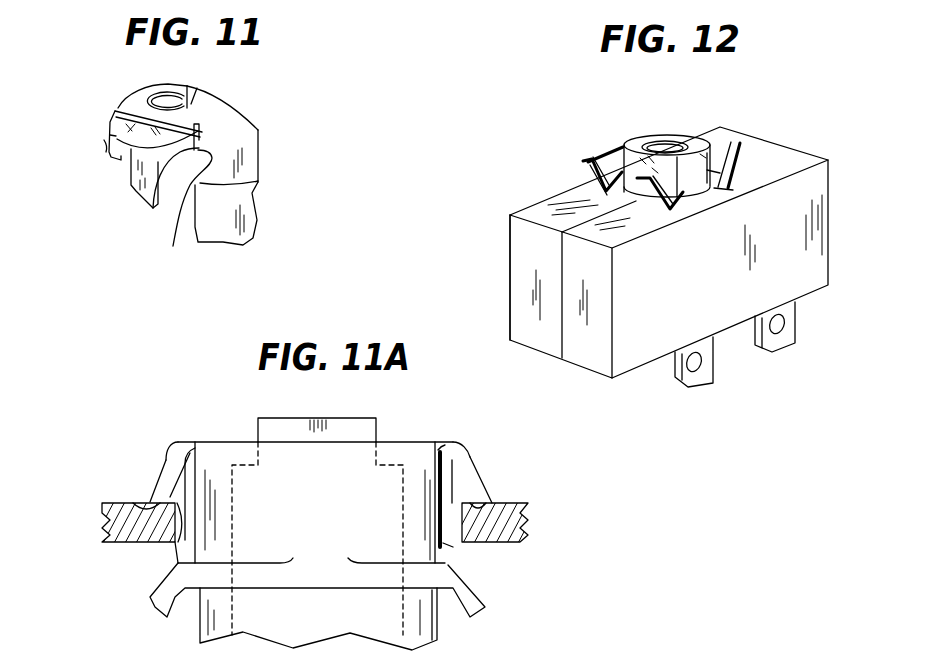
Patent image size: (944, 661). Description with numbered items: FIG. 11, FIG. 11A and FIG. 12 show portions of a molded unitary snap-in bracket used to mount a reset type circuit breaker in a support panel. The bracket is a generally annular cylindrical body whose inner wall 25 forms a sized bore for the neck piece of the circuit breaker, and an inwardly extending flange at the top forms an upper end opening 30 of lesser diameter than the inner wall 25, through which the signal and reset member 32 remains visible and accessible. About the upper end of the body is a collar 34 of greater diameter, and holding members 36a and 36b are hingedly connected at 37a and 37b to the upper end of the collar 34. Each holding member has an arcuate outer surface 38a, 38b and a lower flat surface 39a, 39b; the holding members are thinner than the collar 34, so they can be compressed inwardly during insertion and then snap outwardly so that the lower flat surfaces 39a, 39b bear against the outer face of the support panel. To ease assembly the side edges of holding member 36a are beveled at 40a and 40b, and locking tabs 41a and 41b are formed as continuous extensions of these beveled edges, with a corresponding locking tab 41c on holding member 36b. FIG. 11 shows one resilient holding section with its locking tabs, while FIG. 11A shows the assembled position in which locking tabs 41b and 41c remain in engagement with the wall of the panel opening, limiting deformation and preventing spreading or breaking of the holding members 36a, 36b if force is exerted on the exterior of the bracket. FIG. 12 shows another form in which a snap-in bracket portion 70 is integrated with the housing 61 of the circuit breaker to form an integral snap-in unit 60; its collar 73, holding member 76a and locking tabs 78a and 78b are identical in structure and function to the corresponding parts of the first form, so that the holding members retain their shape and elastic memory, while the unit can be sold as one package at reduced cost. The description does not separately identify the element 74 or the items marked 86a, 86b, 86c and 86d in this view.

In FIG. 11, the inner wall 25 is at (190, 105).
In FIG. 11, the upper end opening 30 is at (191, 90).
In FIG. 11A, the signal and reset member 32 is at (345, 420).
In FIG. 11, the collar 34 is at (252, 149).
In FIG. 11A, the collar 34 is at (411, 442).
In FIG. 11, the holding member 36a is at (118, 106).
In FIG. 11A, the holding member 36a is at (170, 467).
In FIG. 11A, the holding member 36b is at (481, 470).
In FIG. 11A, the hinged connection 37a is at (194, 444).
In FIG. 11A, the hinged connection 37b is at (443, 450).
In FIG. 11A, the arcuate outer surface 38a is at (175, 443).
In FIG. 11A, the arcuate outer surface 38b is at (463, 446).
In FIG. 11A, the lower flat surface 39a is at (128, 503).
In FIG. 11A, the lower flat surface 39b is at (496, 503).
In FIG. 11, the beveled side edge 40a is at (116, 112).
In FIG. 11, the beveled side edge 40b is at (182, 200).
In FIG. 11, the locking tab 41a is at (111, 154).
In FIG. 11, the locking tab 41b is at (153, 201).
In FIG. 11A, the locking tab 41b is at (185, 547).
In FIG. 11A, the locking tab 41c is at (447, 545).
In FIG. 12, the integral snap-in device or unit 60 is at (475, 206).
In FIG. 12, the housing 61 is at (520, 272).
In FIG. 12, the snap-in bracket portion 70 is at (630, 118).
In FIG. 12, the collar 73 is at (722, 160).
In FIG. 12, the central opening 74 is at (660, 138).
In FIG. 12, the holding member 76a is at (622, 148).
In FIG. 12, the locking tab 78a is at (603, 163).
In FIG. 12, the locking tab 78b is at (680, 213).
In FIG. 12, the insertion direction 86a is at (570, 167).
In FIG. 12, the insertion direction 86b is at (655, 222).
In FIG. 12, the insertion direction 86c is at (758, 168).
In FIG. 12, the insertion direction 86d is at (702, 122).